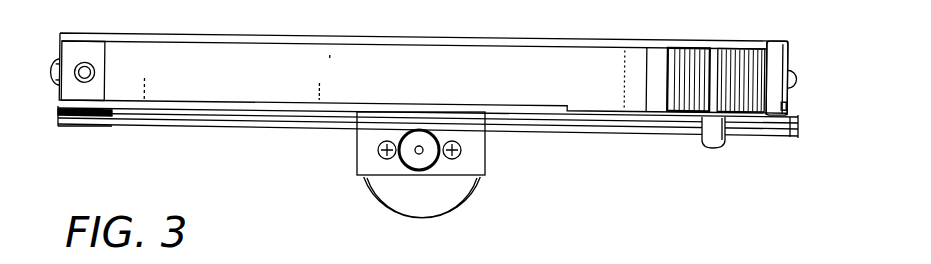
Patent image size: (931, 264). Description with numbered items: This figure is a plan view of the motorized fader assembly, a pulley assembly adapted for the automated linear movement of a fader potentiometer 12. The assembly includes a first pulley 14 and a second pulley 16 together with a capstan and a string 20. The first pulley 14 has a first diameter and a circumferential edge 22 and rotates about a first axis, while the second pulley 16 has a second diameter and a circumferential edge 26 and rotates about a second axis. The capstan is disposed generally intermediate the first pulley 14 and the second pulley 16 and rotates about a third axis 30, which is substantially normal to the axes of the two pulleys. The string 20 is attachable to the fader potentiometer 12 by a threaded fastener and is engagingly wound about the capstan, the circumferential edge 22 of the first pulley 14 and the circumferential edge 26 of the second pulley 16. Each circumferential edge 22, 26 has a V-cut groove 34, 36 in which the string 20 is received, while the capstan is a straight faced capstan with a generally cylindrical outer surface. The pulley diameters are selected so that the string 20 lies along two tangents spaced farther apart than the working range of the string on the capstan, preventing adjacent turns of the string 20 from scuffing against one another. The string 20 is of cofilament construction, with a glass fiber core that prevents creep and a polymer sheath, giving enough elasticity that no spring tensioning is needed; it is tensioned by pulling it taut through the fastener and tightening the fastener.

The fader potentiometer 12 is at (768, 67).
The first pulley 14 is at (103, 127).
The second pulley 16 is at (774, 141).
The string 20 is at (532, 134).
The circumferential edge 22 is at (58, 123).
The circumferential edge 26 is at (797, 128).
The third axis 30 is at (419, 154).
The V-cut groove 34 is at (117, 119).
The V-cut groove 36 is at (750, 134).